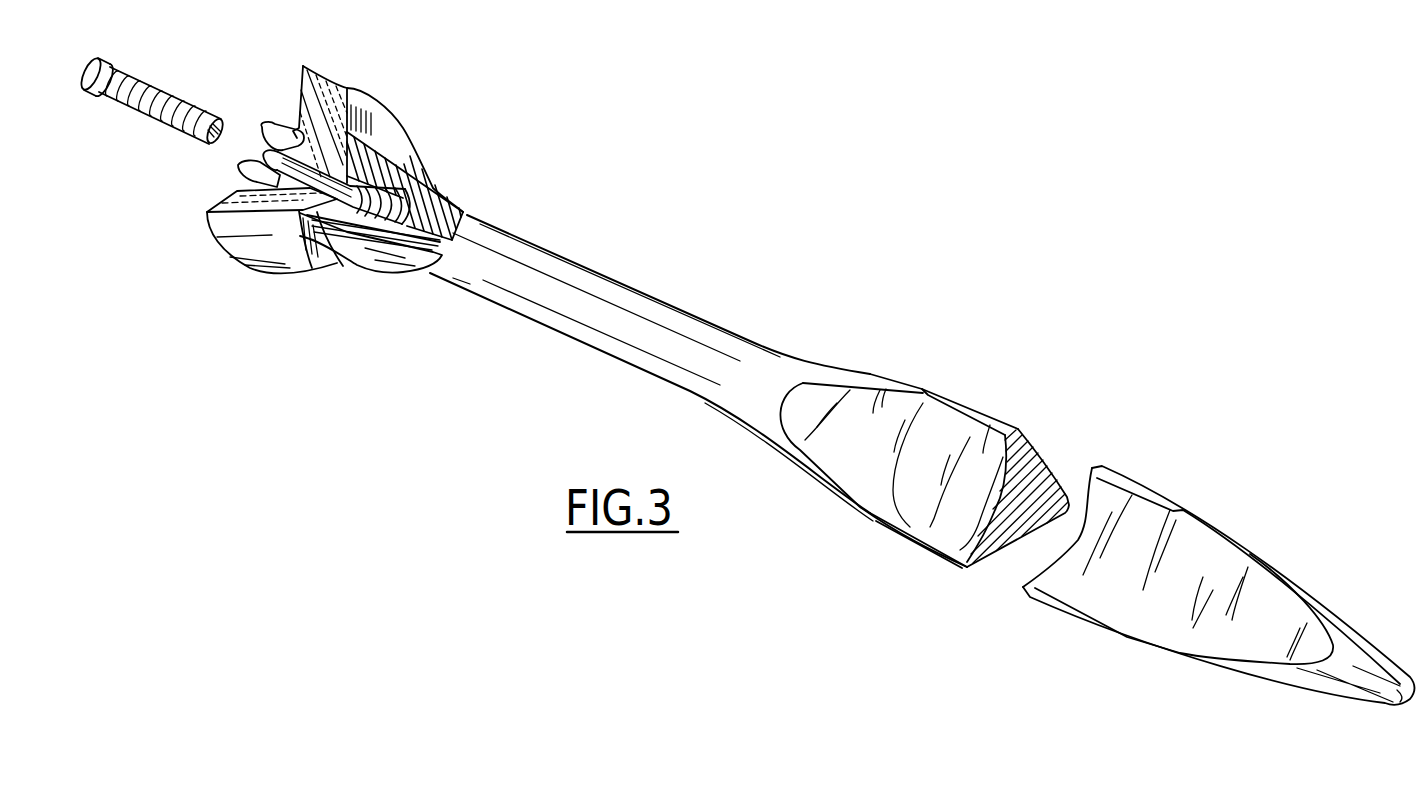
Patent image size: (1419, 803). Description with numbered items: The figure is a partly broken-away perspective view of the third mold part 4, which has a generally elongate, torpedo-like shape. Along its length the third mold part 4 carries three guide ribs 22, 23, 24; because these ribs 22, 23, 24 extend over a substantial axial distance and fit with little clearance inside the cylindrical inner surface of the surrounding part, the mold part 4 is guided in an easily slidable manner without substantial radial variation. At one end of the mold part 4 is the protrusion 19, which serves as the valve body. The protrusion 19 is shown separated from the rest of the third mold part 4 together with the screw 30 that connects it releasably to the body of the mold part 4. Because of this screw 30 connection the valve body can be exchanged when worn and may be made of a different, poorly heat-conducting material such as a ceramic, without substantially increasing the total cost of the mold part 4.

The screw 30 is at (163, 92).
The protrusion 19 is at (353, 89).
The third mold part 4 is at (853, 358).
The guide rib 22 is at (982, 415).
The guide rib 23 is at (1077, 500).
The guide rib 24 is at (933, 548).